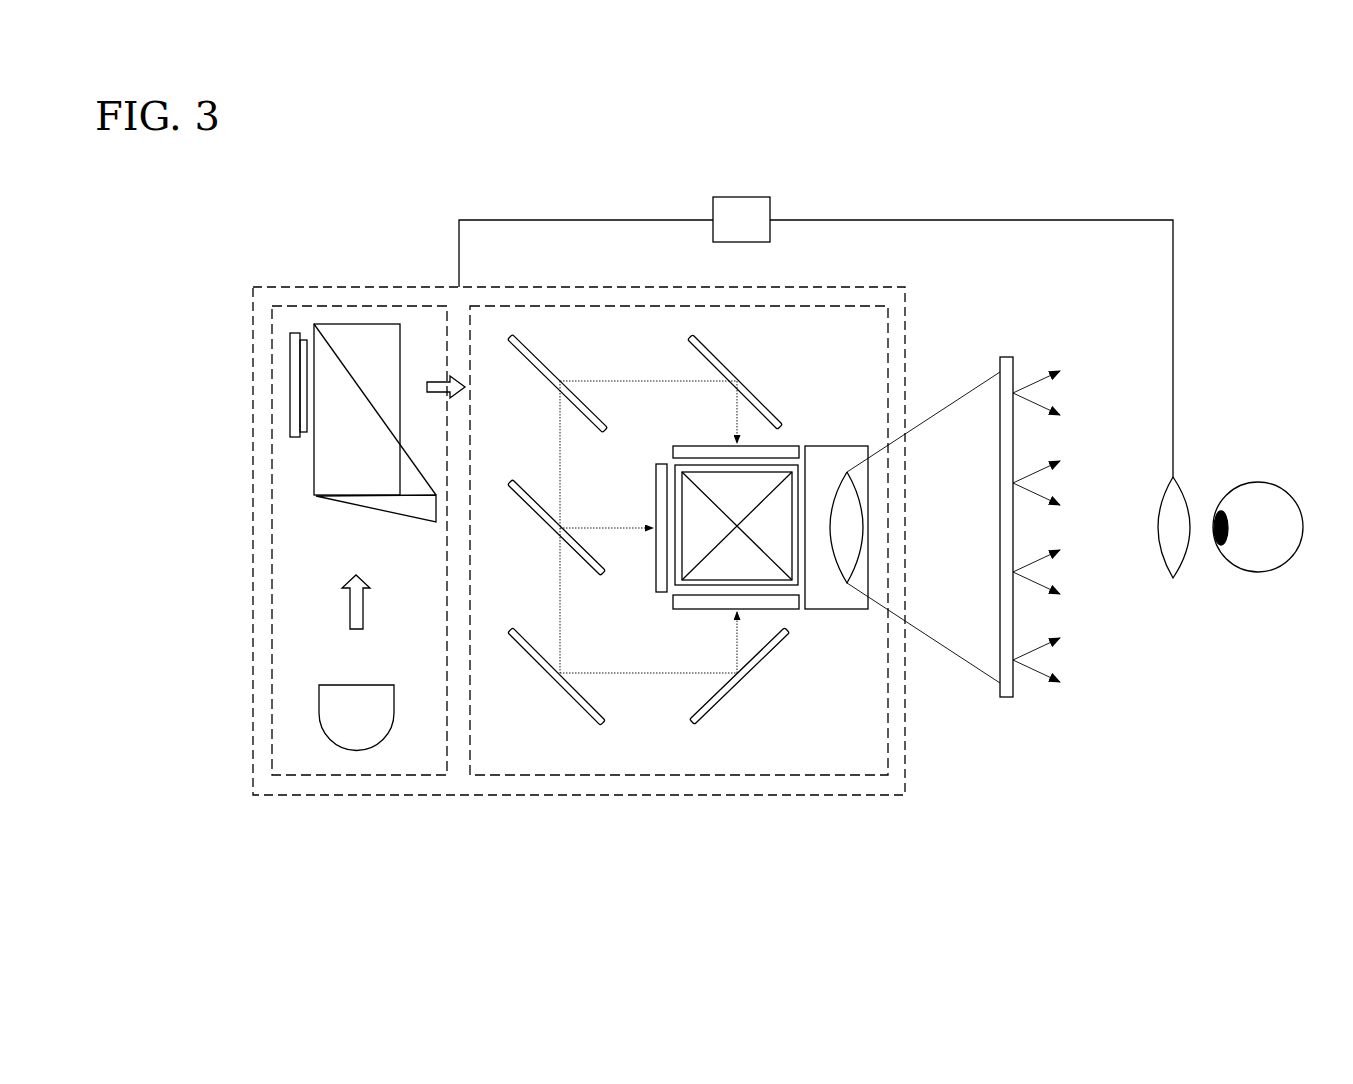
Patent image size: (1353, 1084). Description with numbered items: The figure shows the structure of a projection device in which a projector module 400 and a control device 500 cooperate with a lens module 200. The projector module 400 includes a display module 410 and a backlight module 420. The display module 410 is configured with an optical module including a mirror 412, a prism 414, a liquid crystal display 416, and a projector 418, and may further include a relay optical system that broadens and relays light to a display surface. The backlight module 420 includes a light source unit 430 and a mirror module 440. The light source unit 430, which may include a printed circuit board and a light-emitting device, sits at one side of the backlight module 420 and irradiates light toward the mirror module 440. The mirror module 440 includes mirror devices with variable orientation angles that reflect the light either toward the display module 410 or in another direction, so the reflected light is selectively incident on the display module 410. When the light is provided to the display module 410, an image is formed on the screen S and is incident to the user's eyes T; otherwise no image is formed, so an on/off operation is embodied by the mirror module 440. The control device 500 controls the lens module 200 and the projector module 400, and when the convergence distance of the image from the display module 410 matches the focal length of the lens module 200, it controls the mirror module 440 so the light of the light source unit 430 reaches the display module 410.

The control device 500 is at (750, 195).
The projector module 400 is at (575, 868).
The display module 410 is at (583, 782).
The mirror 412 is at (718, 359).
The prism 414 is at (712, 472).
The liquid crystal display (LCD) 416 is at (655, 482).
The projector 418 is at (837, 453).
The backlight module 420 is at (408, 782).
The light source unit 430 is at (329, 740).
The mirror module 440 is at (314, 467).
The lens module 200 is at (1186, 474).
The screen S is at (1010, 349).
The user's eyes T is at (1271, 472).